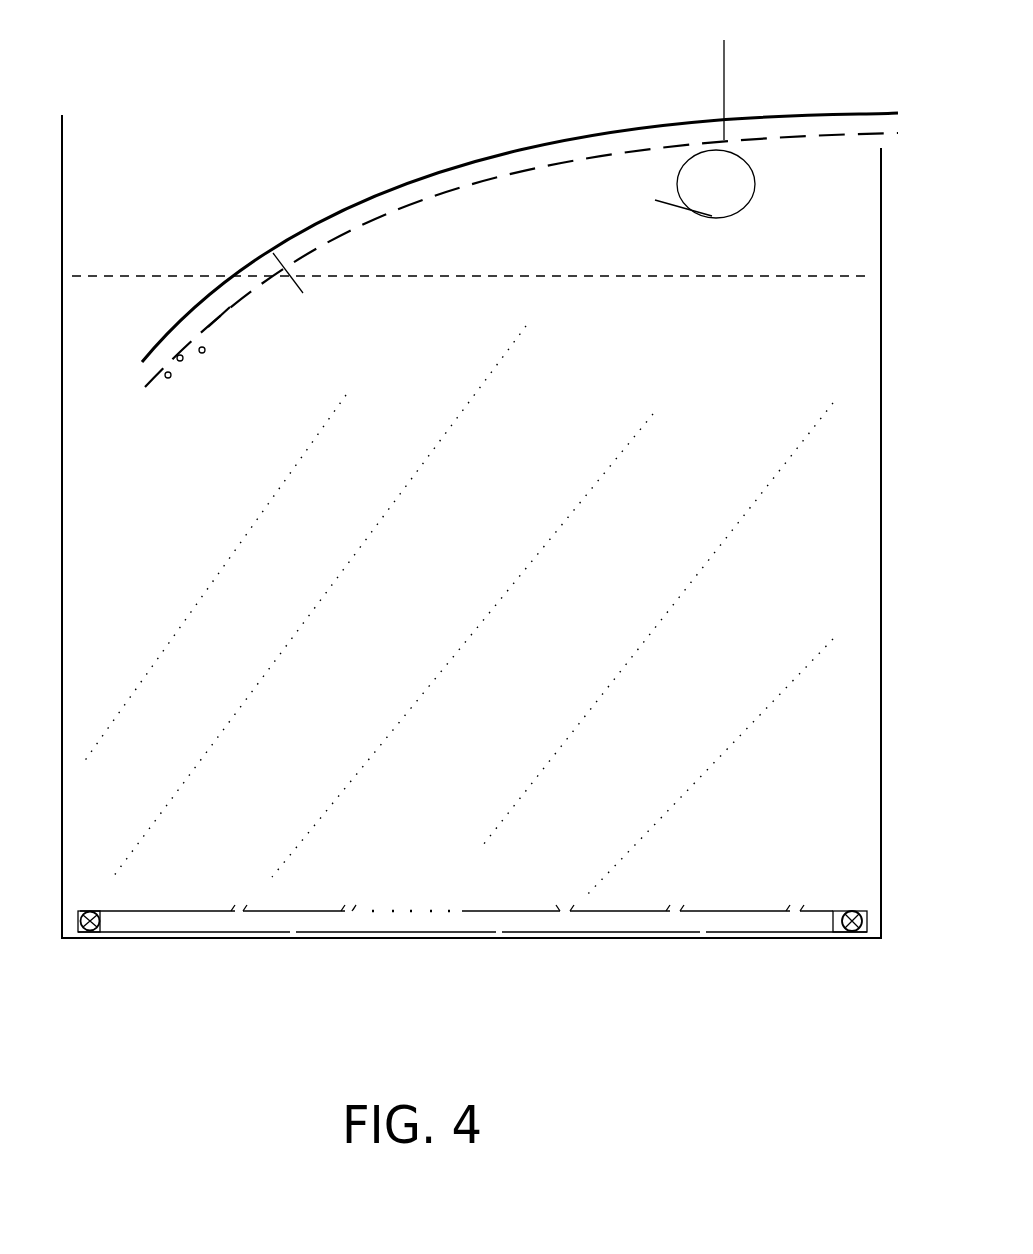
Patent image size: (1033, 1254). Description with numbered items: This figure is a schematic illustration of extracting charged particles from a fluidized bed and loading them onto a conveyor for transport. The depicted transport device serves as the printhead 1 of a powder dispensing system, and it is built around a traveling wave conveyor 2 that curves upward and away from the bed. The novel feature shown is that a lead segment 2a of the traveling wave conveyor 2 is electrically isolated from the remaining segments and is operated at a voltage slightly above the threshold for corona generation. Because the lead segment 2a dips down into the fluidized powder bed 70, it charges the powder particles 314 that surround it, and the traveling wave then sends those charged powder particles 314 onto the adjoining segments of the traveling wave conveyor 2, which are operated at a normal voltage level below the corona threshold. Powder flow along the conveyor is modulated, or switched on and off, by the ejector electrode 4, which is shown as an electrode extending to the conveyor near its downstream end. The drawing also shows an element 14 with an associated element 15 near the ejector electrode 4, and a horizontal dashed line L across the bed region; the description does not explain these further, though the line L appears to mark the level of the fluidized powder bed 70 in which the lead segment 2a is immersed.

The printhead 1 is at (368, 158).
The traveling wave conveyor 2 is at (507, 175).
The lead segment 2a is at (230, 307).
The ejector electrode 4 is at (720, 104).
The float 14 is at (735, 182).
The float arm 15 is at (662, 230).
The fluidized powder bed 70 is at (471, 526).
The powder particles 314 is at (204, 353).
The liquid level L is at (471, 311).